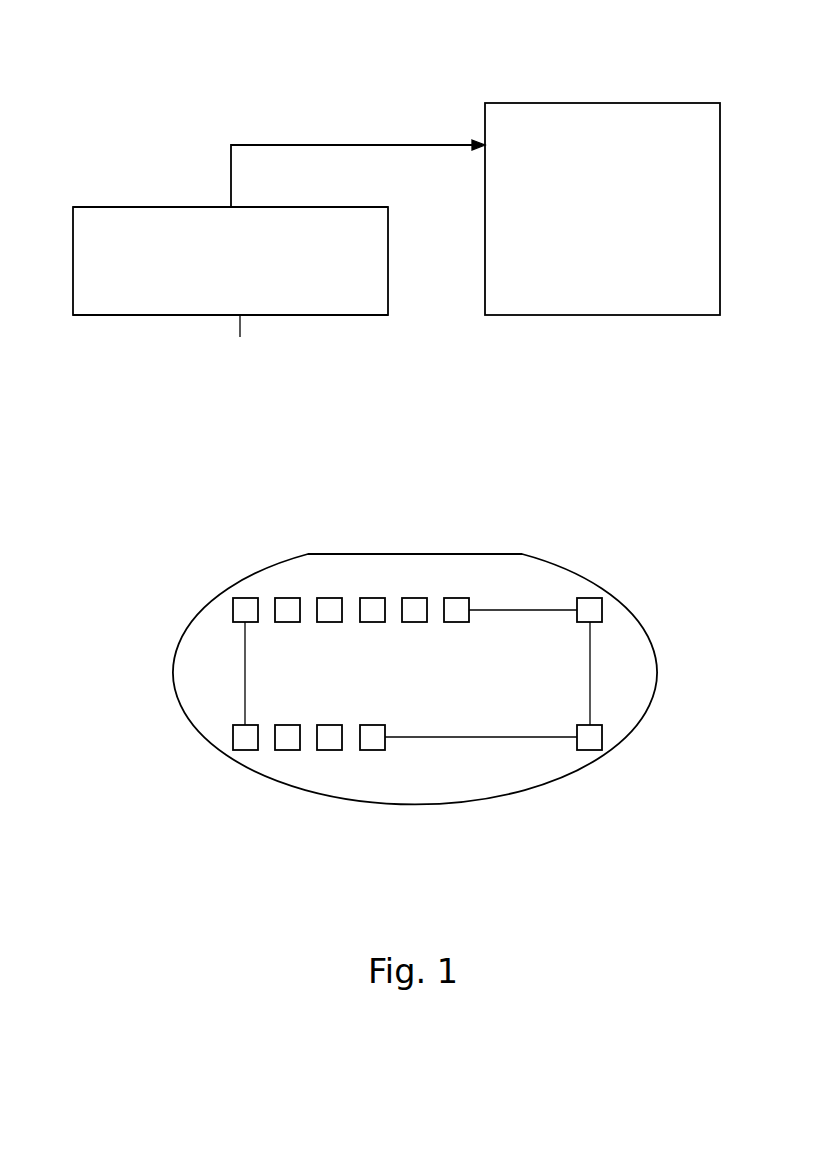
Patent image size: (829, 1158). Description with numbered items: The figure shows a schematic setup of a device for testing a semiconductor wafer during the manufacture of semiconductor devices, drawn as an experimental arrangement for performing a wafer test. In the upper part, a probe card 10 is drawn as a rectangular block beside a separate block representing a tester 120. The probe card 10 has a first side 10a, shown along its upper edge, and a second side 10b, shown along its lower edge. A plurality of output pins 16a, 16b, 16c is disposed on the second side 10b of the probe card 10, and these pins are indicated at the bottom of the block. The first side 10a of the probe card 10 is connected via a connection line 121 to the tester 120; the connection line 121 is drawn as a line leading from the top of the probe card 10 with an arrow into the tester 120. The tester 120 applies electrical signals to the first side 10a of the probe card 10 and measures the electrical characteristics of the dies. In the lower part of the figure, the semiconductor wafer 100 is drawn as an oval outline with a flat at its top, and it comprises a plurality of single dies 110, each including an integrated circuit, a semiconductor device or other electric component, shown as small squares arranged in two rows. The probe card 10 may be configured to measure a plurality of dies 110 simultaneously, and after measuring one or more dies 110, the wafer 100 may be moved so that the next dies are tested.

The probe card 10 is at (288, 207).
The first side 10a is at (355, 207).
The second side 10b is at (363, 315).
The output pin 16a is at (107, 315).
The output pin 16b is at (125, 315).
The output pin 16c is at (220, 315).
The semiconductor wafer 100 is at (545, 787).
The single dies 110 is at (283, 750).
The tester 120 is at (602, 315).
The connection line 121 is at (372, 145).